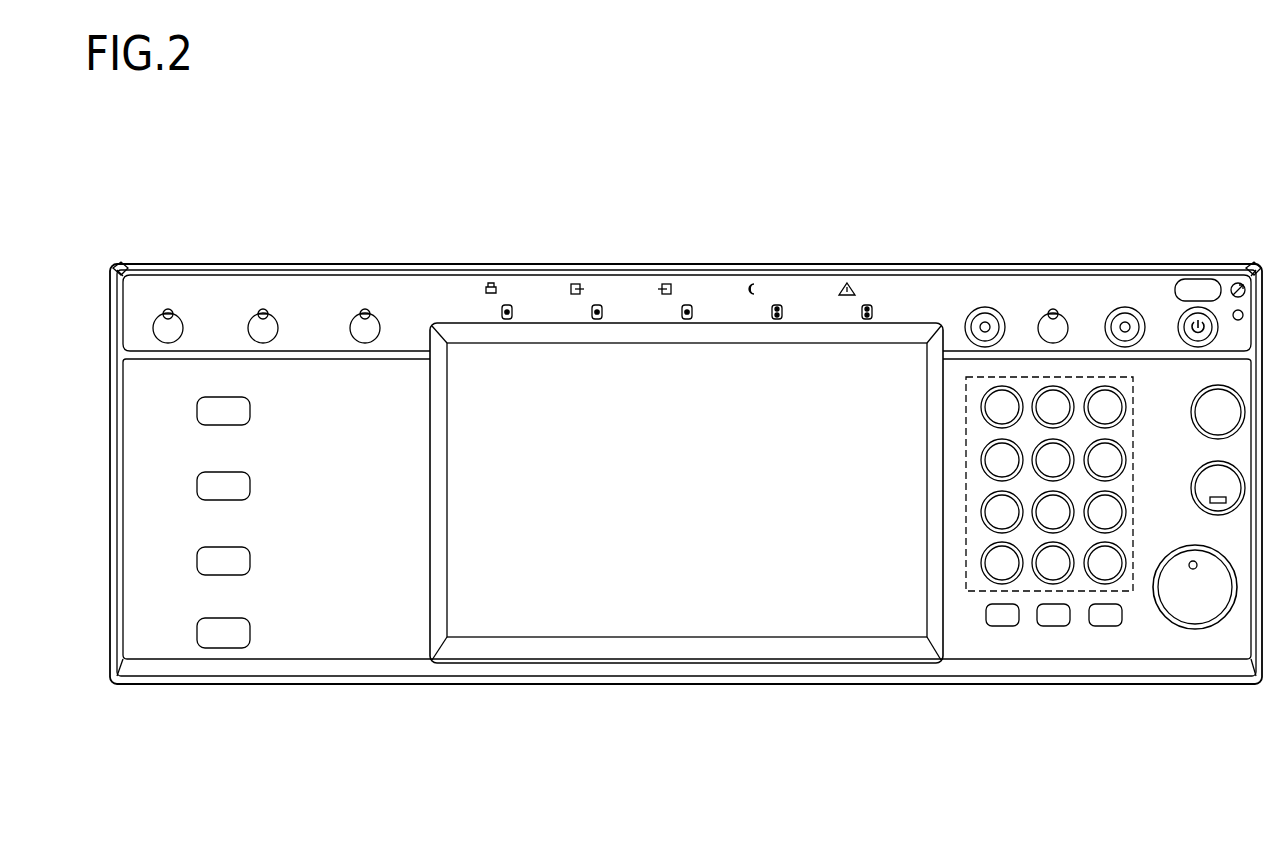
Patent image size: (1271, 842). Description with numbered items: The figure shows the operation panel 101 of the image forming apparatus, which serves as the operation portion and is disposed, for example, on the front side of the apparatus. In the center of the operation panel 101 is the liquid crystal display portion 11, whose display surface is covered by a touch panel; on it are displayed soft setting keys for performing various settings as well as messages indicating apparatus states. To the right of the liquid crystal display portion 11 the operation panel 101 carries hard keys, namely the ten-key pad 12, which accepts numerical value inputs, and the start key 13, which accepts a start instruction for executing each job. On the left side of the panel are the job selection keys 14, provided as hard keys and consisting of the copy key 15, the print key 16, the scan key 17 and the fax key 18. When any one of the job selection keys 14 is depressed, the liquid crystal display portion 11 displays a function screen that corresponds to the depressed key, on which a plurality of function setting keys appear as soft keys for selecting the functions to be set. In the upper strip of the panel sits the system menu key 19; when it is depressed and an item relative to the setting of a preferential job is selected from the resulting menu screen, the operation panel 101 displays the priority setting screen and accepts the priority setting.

The operation panel 101 is at (111, 258).
The liquid crystal display portion 11 is at (647, 613).
The ten-key pad 12 is at (975, 597).
The start key 13 is at (1195, 605).
The job selection keys 14 is at (287, 514).
The copy key 15 is at (245, 411).
The print key 16 is at (245, 486).
The scan key 17 is at (245, 561).
The fax key 18 is at (261, 635).
The system menu key 19 is at (168, 327).